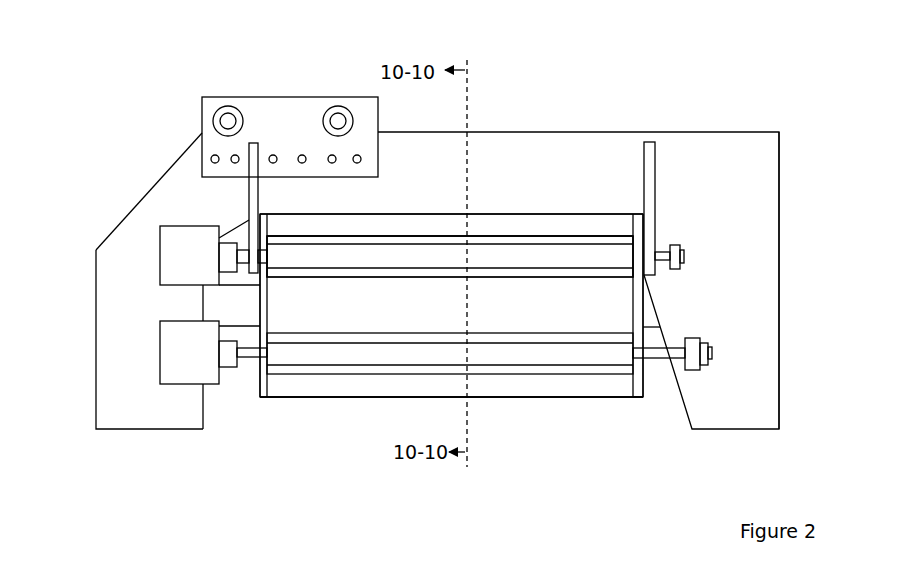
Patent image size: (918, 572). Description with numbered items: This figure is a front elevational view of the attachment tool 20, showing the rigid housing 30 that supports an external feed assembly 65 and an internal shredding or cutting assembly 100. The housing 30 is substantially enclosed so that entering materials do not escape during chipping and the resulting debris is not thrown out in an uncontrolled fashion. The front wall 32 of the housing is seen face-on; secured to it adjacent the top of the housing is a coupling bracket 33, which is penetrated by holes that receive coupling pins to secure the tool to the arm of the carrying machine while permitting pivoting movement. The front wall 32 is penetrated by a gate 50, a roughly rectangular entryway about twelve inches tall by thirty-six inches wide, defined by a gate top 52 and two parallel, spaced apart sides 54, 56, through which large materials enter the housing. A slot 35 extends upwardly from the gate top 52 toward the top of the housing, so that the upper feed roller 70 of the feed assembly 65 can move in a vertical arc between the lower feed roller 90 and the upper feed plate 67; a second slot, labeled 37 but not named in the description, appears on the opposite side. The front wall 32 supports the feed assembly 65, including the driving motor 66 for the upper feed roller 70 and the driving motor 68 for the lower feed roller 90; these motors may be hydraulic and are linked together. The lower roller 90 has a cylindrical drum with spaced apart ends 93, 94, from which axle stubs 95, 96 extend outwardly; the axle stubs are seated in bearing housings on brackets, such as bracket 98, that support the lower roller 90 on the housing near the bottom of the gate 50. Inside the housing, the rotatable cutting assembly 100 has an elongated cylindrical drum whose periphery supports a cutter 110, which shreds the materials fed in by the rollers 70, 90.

The attachment tool 20 is at (123, 49).
The rigid housing 30 is at (617, 66).
The front wall 32 is at (739, 157).
The coupling bracket 33 is at (257, 122).
The slot 35 is at (248, 190).
The right support bracket 37 is at (650, 145).
The gate 50 is at (547, 221).
The gate top 52 is at (503, 213).
The gate side 54 is at (258, 390).
The gate side 56 is at (642, 382).
The feed assembly 65 is at (732, 222).
The driving motor 66 is at (170, 262).
The upper feed plate 67 is at (608, 227).
The driving motor 68 is at (170, 355).
The upper feed roller 70 is at (389, 240).
The lower feed roller 90 is at (387, 362).
The end of lower roller drum 93 is at (260, 367).
The end of lower roller drum 94 is at (638, 398).
The axle stub 95 is at (248, 354).
The axle stub 96 is at (653, 352).
The bracket 98 is at (712, 352).
The cutting assembly 100 is at (564, 412).
The cutter 110 is at (519, 395).